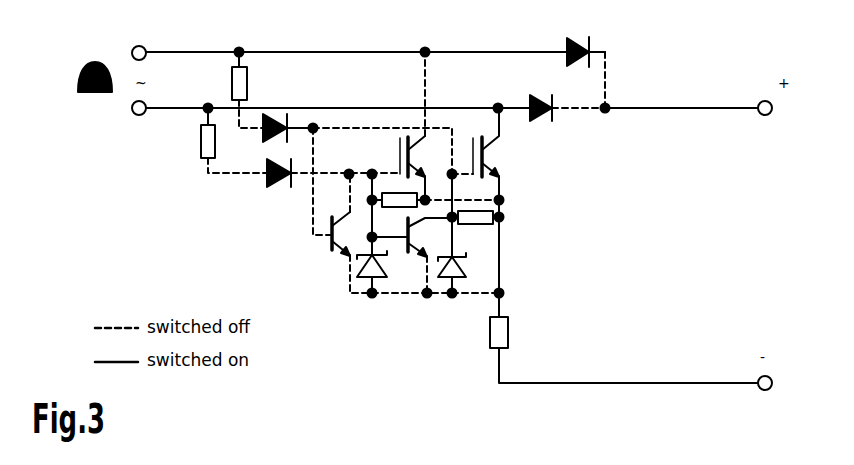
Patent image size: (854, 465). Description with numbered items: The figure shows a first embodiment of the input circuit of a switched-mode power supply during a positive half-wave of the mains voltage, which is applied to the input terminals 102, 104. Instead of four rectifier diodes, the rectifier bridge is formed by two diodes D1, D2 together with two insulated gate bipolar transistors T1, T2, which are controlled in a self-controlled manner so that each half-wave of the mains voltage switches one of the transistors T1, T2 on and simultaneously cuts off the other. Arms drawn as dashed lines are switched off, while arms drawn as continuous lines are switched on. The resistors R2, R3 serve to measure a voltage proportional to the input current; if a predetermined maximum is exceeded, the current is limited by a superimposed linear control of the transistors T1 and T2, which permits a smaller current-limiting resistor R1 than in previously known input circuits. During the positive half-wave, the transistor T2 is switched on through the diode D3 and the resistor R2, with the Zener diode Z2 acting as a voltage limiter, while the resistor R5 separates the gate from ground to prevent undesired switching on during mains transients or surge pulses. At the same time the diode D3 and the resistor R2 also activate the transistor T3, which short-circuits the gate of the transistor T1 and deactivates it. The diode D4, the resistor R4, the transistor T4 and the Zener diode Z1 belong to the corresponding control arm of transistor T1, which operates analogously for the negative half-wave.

The input terminal 102 is at (139, 46).
The input terminal 104 is at (139, 115).
The current-limiting resistor R1 is at (624, 338).
The resistor R2 is at (232, 90).
The resistor R3 is at (223, 140).
The resistor R4 is at (435, 209).
The resistor R5 is at (475, 230).
The diode D1 is at (598, 72).
The diode D2 is at (563, 98).
The diode D3 is at (288, 113).
The diode D4 is at (333, 186).
The insulated gate bipolar transistor T1 is at (398, 126).
The insulated gate bipolar transistor T2 is at (487, 200).
The transistor T3 is at (339, 233).
The transistor T4 is at (412, 255).
The Zener diode Z1 is at (381, 265).
The Zener diode Z2 is at (463, 233).